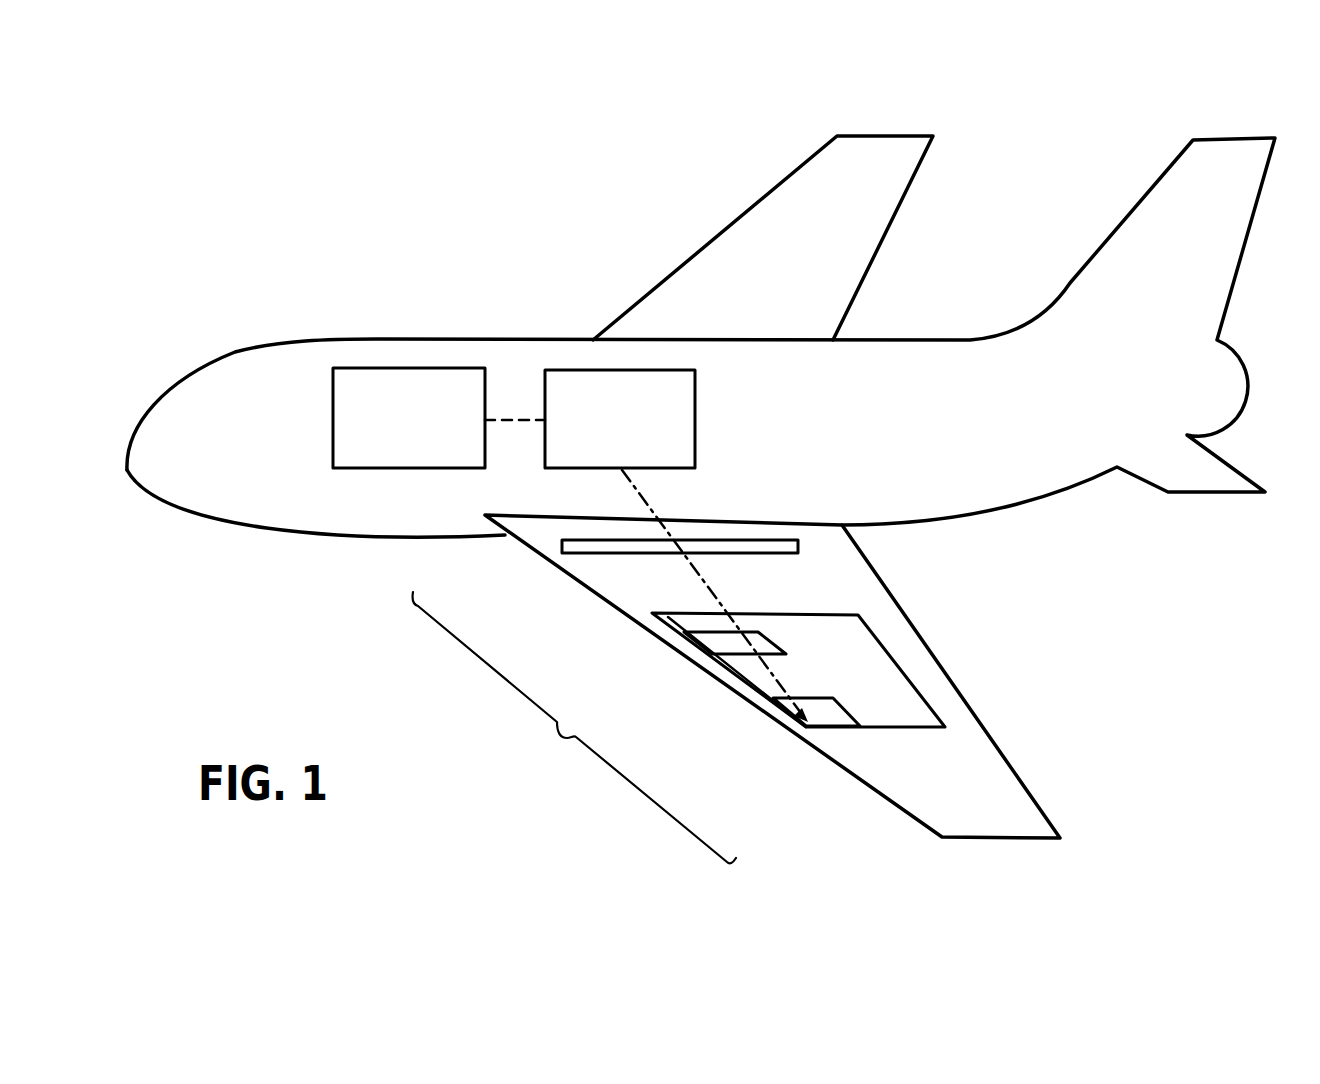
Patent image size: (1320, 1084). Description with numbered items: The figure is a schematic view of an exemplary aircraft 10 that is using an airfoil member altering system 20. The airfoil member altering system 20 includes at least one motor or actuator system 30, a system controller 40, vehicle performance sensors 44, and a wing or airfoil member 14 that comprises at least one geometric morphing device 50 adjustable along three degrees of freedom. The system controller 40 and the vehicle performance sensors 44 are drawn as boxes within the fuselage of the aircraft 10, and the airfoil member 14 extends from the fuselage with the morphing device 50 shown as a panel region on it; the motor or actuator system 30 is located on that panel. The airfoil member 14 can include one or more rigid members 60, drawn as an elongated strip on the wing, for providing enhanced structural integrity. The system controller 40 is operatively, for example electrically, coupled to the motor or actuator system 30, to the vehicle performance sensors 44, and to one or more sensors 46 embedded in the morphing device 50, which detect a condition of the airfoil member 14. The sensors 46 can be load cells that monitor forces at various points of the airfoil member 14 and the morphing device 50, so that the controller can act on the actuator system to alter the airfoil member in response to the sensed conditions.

The aircraft 10 is at (175, 376).
The airfoil member 14 is at (893, 606).
The airfoil member altering system 20 is at (574, 727).
The motor or actuator system 30 is at (804, 719).
The system controller 40 is at (602, 433).
The vehicle performance sensors 44 is at (393, 435).
The sensors 46 is at (700, 637).
The geometric morphing device 50 is at (925, 689).
The rigid member 60 is at (787, 535).